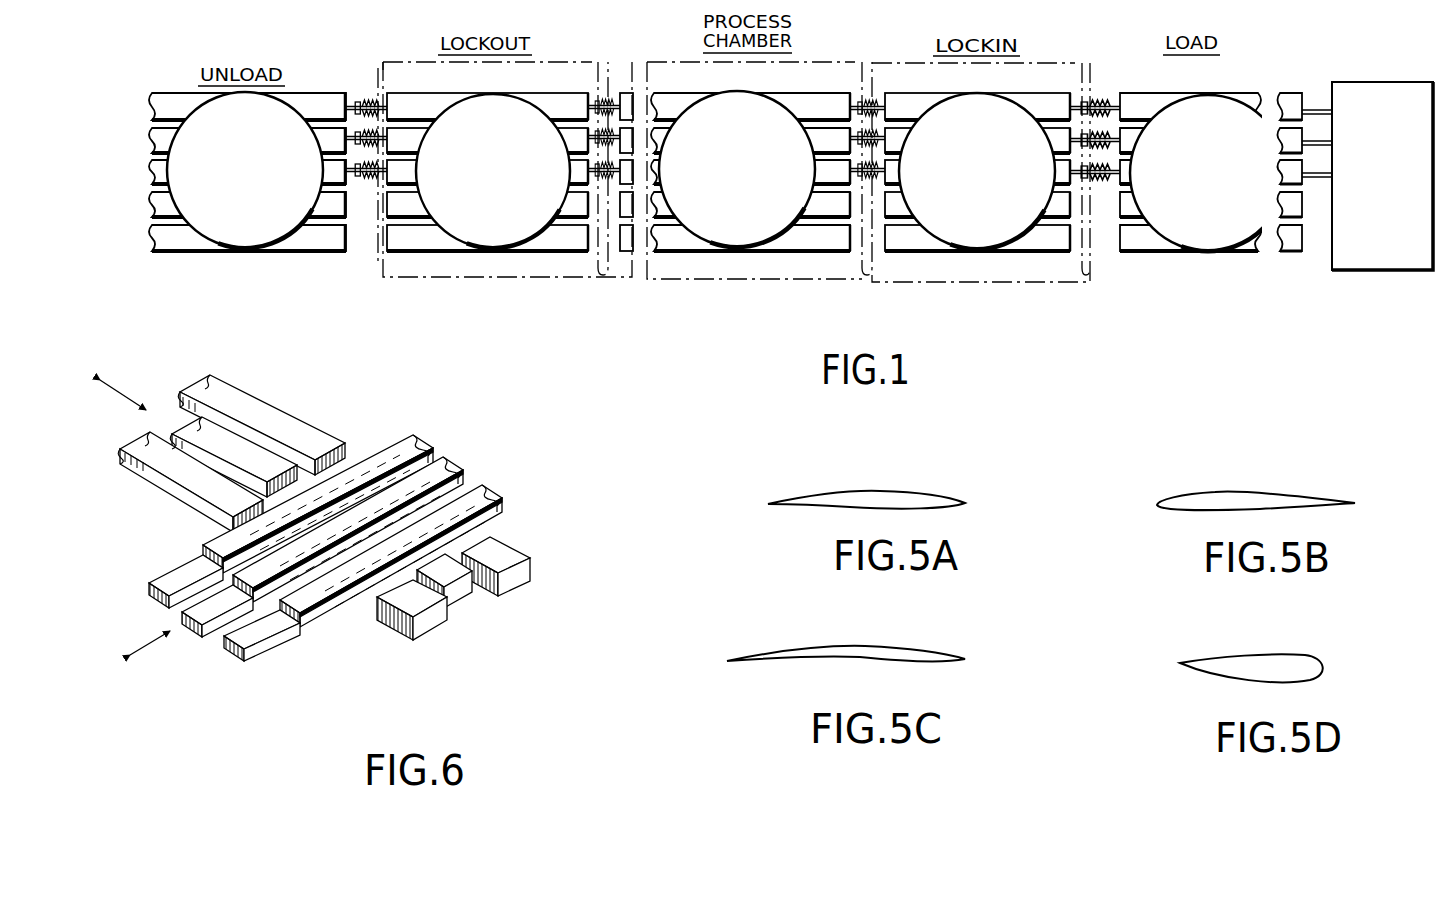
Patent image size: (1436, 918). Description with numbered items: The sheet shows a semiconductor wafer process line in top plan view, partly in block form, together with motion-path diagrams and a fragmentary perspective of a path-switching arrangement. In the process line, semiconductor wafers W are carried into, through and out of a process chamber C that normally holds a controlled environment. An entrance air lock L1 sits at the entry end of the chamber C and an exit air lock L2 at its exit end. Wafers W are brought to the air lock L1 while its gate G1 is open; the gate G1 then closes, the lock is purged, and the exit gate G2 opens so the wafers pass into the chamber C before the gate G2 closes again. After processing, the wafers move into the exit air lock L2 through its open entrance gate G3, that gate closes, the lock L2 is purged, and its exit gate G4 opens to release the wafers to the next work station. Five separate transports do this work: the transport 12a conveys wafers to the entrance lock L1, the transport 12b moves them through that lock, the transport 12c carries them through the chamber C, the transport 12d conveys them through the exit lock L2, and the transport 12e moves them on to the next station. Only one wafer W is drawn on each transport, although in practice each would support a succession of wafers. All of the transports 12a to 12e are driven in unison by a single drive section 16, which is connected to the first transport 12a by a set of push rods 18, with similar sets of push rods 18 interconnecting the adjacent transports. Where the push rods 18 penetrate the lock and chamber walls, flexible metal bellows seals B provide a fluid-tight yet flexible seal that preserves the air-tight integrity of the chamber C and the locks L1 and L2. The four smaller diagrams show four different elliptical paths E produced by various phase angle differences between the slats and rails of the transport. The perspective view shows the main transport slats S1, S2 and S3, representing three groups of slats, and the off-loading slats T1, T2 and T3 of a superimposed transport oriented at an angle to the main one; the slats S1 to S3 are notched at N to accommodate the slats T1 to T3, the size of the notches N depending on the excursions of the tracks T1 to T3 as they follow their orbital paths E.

In FIG. 1, the transport 12a is at (1202, 265).
In FIG. 1, the transport 12b is at (975, 270).
In FIG. 1, the transport 12c is at (727, 268).
In FIG. 1, the transport 12d is at (496, 270).
In FIG. 1, the transport 12e is at (296, 262).
In FIG. 1, the drive section 16 is at (1362, 272).
In FIG. 1, the push rods 18 is at (348, 145).
In FIG. 1, the semiconductor wafer W is at (202, 118).
In FIG. 1, the flexible metal bellows seal B is at (368, 110).
In FIG. 1, the gate G1 is at (1075, 62).
In FIG. 1, the exit gate G2 is at (883, 62).
In FIG. 1, the entrance gate G3 is at (615, 62).
In FIG. 1, the exit gate G4 is at (382, 68).
In FIG. 1, the air lock L1 is at (904, 56).
In FIG. 1, the air lock L2 is at (405, 56).
In FIG. 1, the process chamber C is at (667, 62).
In FIG. 5A, the elliptical path E is at (875, 492).
In FIG. 5B, the elliptical path E is at (1238, 492).
In FIG. 5C, the elliptical path E is at (868, 645).
In FIG. 5D, the elliptical path E is at (1235, 658).
In FIG. 6, the notch N is at (327, 456).
In FIG. 6, the off-loading slat T1 is at (149, 585).
In FIG. 6, the off-loading slat T2 is at (200, 630).
In FIG. 6, the off-loading slat T3 is at (238, 652).
In FIG. 6, the slat S1 is at (427, 626).
In FIG. 6, the slat S2 is at (462, 596).
In FIG. 6, the slat S3 is at (514, 584).